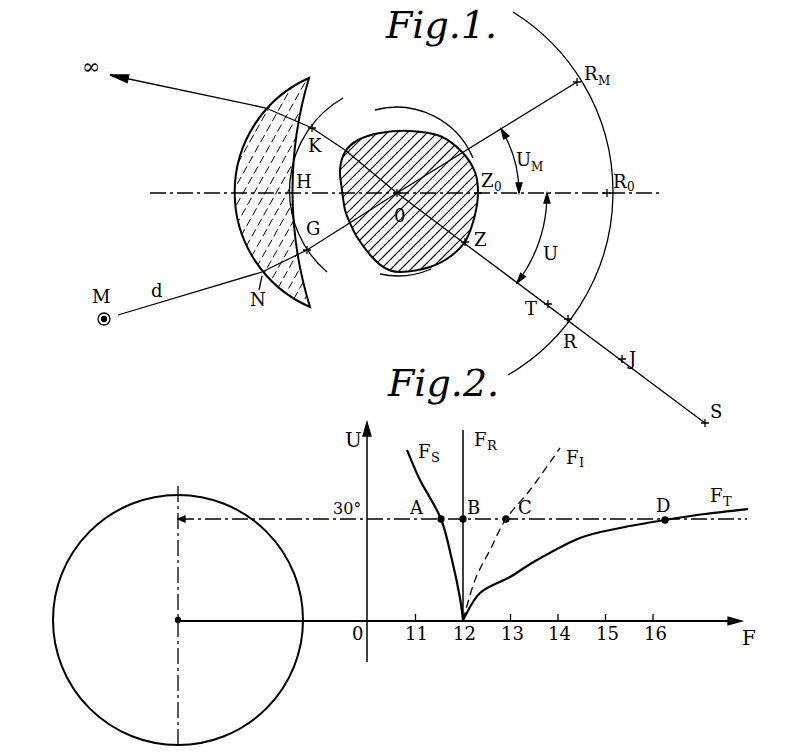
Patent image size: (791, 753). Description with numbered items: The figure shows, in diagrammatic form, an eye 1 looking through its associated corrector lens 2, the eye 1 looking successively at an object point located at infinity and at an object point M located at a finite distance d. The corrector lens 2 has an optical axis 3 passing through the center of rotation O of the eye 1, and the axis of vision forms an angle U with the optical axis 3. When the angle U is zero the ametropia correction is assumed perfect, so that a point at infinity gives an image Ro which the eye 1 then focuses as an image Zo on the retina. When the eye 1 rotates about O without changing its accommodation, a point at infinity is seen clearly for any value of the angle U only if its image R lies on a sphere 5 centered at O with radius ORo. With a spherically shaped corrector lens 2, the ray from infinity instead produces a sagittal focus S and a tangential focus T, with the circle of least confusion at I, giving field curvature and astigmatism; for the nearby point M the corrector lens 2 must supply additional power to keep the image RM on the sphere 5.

The eye 1 is at (402, 254).
The corrector lens 2 is at (241, 240).
The optical axis 3 is at (214, 192).
The sphere 5 is at (601, 248).